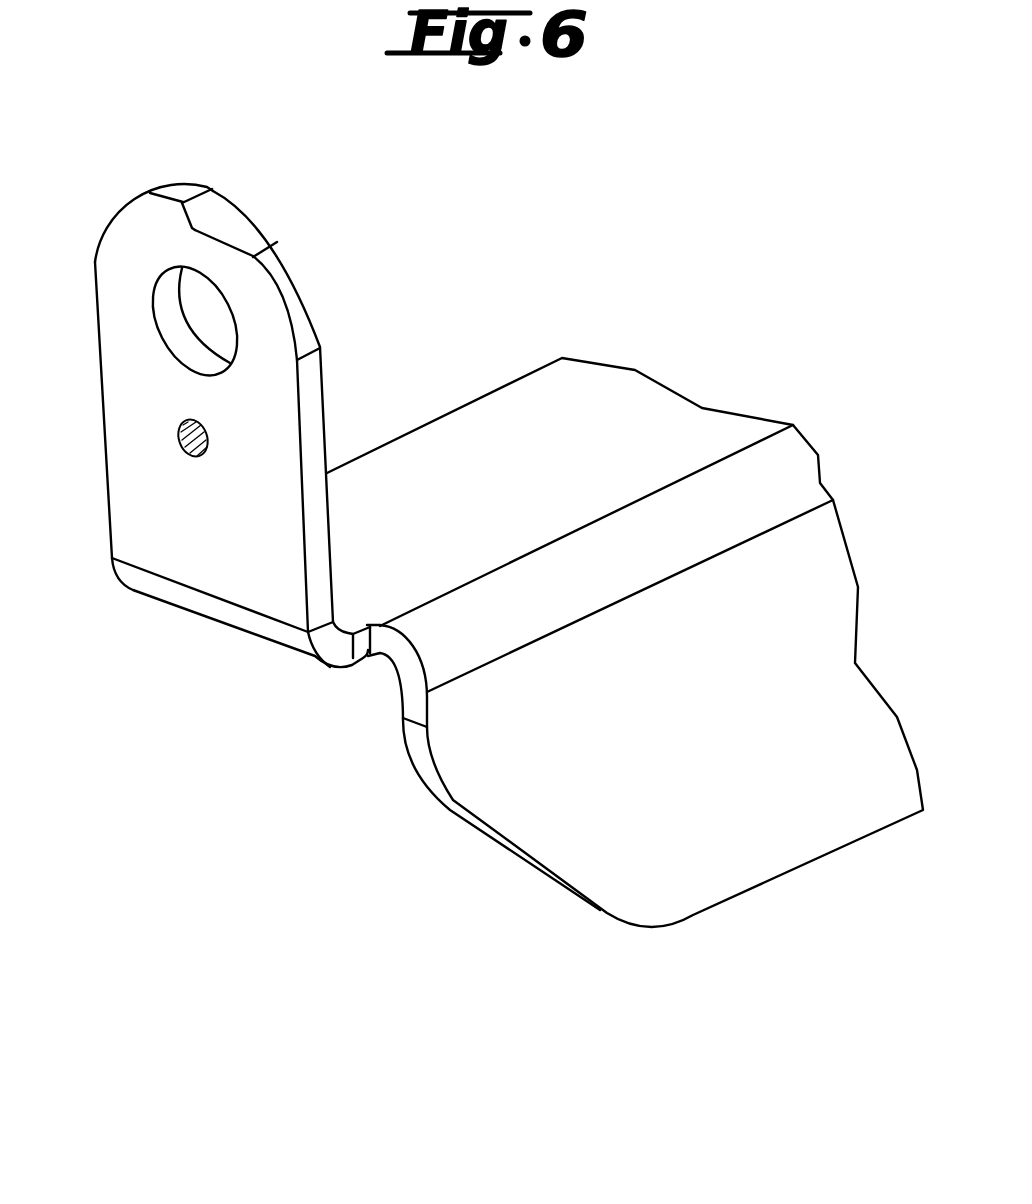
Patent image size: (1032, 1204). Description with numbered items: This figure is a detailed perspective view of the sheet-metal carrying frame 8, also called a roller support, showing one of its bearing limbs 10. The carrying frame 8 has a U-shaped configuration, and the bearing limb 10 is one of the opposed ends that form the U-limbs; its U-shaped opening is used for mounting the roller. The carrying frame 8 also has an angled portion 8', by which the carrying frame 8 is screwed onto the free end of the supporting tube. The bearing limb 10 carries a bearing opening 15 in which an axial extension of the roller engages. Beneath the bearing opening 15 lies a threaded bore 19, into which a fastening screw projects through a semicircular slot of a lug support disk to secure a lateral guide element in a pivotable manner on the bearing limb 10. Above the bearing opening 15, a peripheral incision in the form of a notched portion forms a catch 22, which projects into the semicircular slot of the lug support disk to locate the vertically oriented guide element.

The bearing limb 10 is at (232, 495).
The bearing opening 15 is at (167, 307).
The threaded bore 19 is at (180, 441).
The catch 22 is at (193, 198).
The carrying frame 8 is at (625, 707).
The angled portion 8' is at (636, 763).